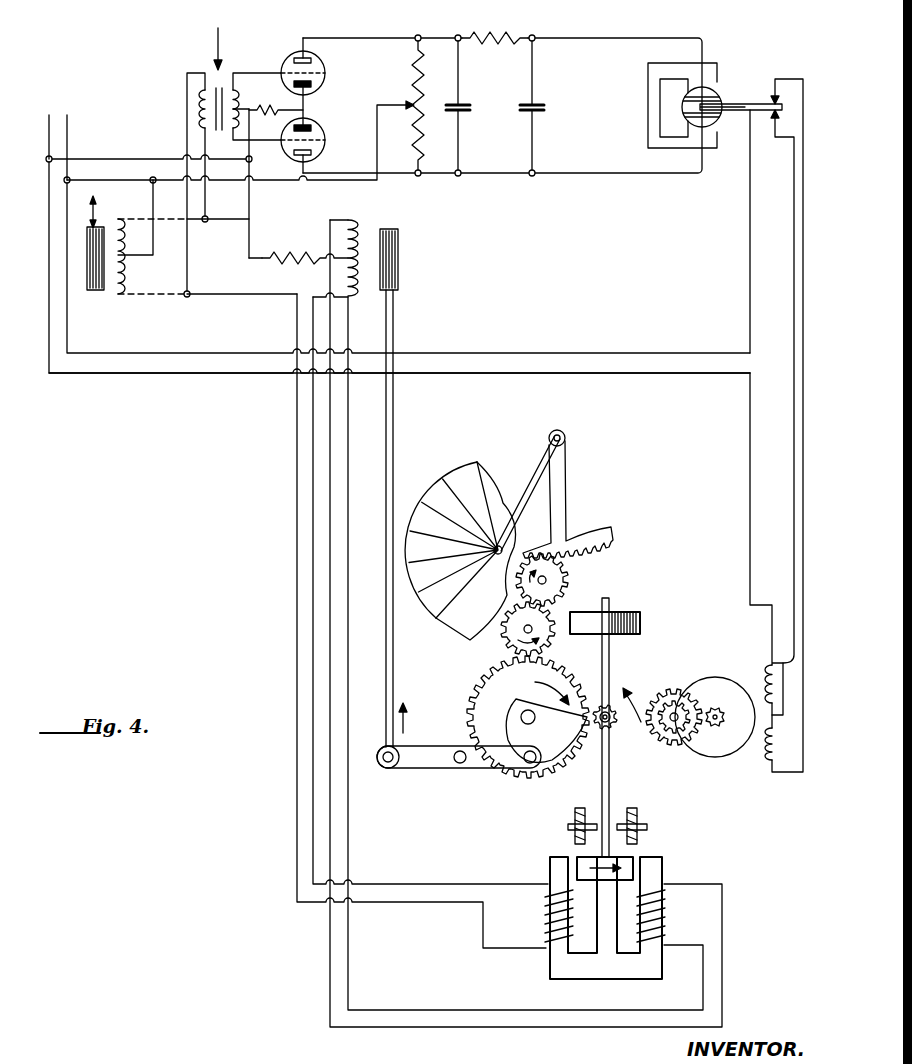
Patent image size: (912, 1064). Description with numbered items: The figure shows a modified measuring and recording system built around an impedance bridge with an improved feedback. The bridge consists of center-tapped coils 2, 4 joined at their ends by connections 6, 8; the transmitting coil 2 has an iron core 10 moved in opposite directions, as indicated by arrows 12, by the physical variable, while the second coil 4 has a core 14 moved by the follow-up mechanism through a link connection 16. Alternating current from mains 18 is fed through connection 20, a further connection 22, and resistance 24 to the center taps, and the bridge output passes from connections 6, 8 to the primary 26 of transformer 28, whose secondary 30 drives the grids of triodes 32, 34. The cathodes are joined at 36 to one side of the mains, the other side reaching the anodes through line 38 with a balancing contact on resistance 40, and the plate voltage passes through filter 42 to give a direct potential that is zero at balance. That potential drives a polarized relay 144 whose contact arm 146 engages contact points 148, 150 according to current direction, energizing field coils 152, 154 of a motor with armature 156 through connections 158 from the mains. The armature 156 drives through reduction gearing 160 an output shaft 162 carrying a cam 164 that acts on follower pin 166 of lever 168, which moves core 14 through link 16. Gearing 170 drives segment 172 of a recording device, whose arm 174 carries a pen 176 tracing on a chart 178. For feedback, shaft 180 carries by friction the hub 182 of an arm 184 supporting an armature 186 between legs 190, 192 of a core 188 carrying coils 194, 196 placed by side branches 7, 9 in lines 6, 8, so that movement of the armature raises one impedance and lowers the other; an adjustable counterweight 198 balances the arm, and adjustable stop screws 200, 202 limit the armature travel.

The center-tapped coil 2 is at (132, 258).
The center-tapped coil 4 is at (364, 226).
The connection 6 is at (230, 219).
The side branch 7 is at (331, 475).
The connection 8 is at (260, 296).
The side branch 9 is at (312, 535).
The iron core 10 is at (87, 280).
The arrows 12 is at (100, 206).
The core 14 is at (399, 274).
The link connection 16 is at (395, 692).
The mains 18 is at (67, 116).
The connection 20 is at (158, 240).
The conductor 22 is at (247, 246).
The resistance 24 is at (316, 256).
The primary 26 is at (197, 109).
The transformer 28 is at (211, 151).
The transformer secondary 30 is at (243, 104).
The triode 32 is at (324, 82).
The triode 34 is at (324, 148).
The cathode connection 36 is at (252, 116).
The line 38 is at (310, 183).
The resistance 40 is at (412, 96).
The filter system 42 is at (492, 168).
The polarized relay 144 is at (714, 90).
The contact arm 146 is at (728, 134).
The contact point 148 is at (776, 80).
The contact point 150 is at (775, 138).
The field coil 152 is at (764, 674).
The field coil 154 is at (764, 756).
The motor armature 156 is at (712, 706).
The connections 158 is at (600, 356).
The reduction gearing 160 is at (640, 694).
The output shaft 162 is at (524, 710).
The cam 164 is at (538, 778).
The follower pin 166 is at (500, 770).
The lever 168 is at (438, 746).
The gearing 170 is at (564, 581).
The segment 172 is at (612, 538).
The arm 174 is at (520, 468).
The pen 176 is at (480, 542).
The chart 178 is at (450, 482).
The shaft 180 is at (614, 742).
The hub 182 is at (598, 740).
The arm 184 is at (645, 806).
The armature 186 is at (640, 868).
The core 188 is at (600, 966).
The leg 190 is at (556, 866).
The leg 192 is at (660, 866).
The coil 194 is at (664, 904).
The coil 196 is at (546, 902).
The adjustable counterweight 198 is at (636, 606).
The adjustable stop screw 200 is at (570, 820).
The adjustable stop screw 202 is at (642, 826).